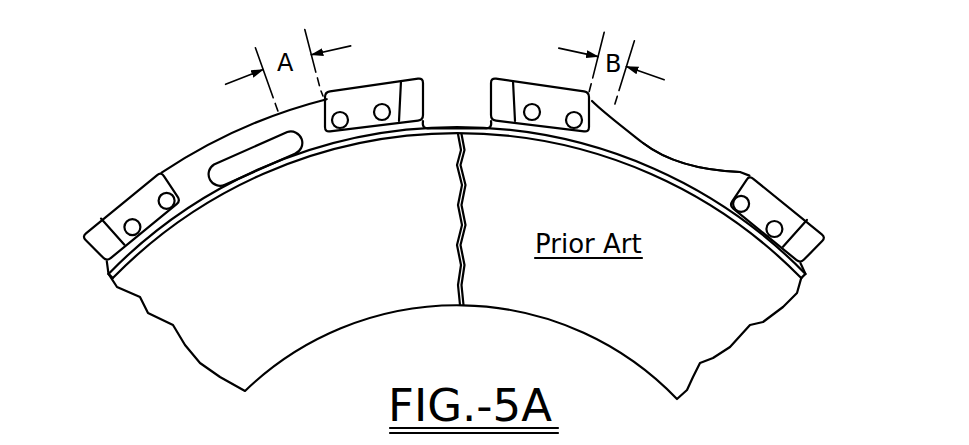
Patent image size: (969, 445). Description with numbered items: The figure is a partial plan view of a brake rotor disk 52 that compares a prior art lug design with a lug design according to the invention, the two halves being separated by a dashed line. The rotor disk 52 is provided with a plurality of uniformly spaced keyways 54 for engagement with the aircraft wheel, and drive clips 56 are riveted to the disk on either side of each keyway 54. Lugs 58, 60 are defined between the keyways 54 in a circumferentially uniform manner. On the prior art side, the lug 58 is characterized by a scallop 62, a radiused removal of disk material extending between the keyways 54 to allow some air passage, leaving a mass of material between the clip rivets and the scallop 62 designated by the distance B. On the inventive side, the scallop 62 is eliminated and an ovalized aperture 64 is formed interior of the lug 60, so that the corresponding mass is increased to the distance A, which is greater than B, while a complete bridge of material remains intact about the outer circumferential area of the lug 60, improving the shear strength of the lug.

The rotor disk 52 is at (170, 70).
The keyways 54 is at (458, 107).
The drive clips 56 is at (122, 202).
The lug 58 is at (658, 156).
The lug 60 is at (228, 143).
The scallop 62 is at (680, 151).
The aperture 64 is at (263, 160).